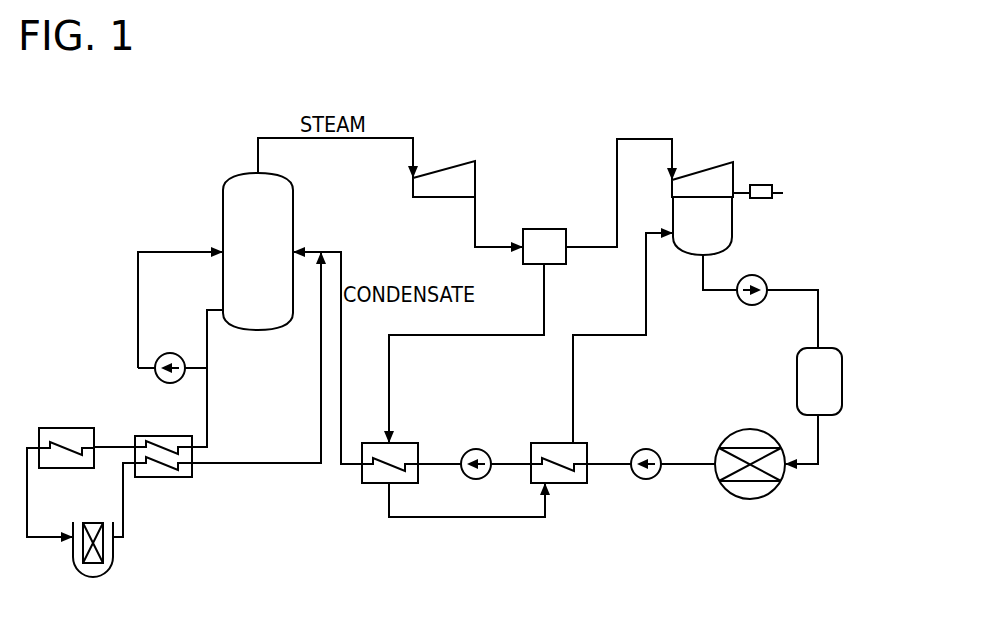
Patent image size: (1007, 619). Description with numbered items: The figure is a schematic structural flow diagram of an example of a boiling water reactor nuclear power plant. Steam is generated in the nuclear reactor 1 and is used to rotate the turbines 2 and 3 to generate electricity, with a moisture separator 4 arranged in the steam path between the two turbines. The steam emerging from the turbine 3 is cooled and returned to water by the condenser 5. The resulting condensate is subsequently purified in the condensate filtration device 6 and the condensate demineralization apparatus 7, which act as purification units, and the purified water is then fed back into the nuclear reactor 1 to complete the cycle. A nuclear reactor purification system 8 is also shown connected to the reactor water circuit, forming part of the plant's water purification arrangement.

The nuclear reactor 1 is at (222, 205).
The turbine 2 is at (447, 163).
The turbine 3 is at (703, 170).
The moisture separator 4 is at (543, 229).
The condenser 5 is at (735, 221).
The condensate filtration device 6 is at (845, 381).
The condensate demineralization apparatus 7 is at (768, 497).
The nuclear reactor purification system 8 is at (115, 557).